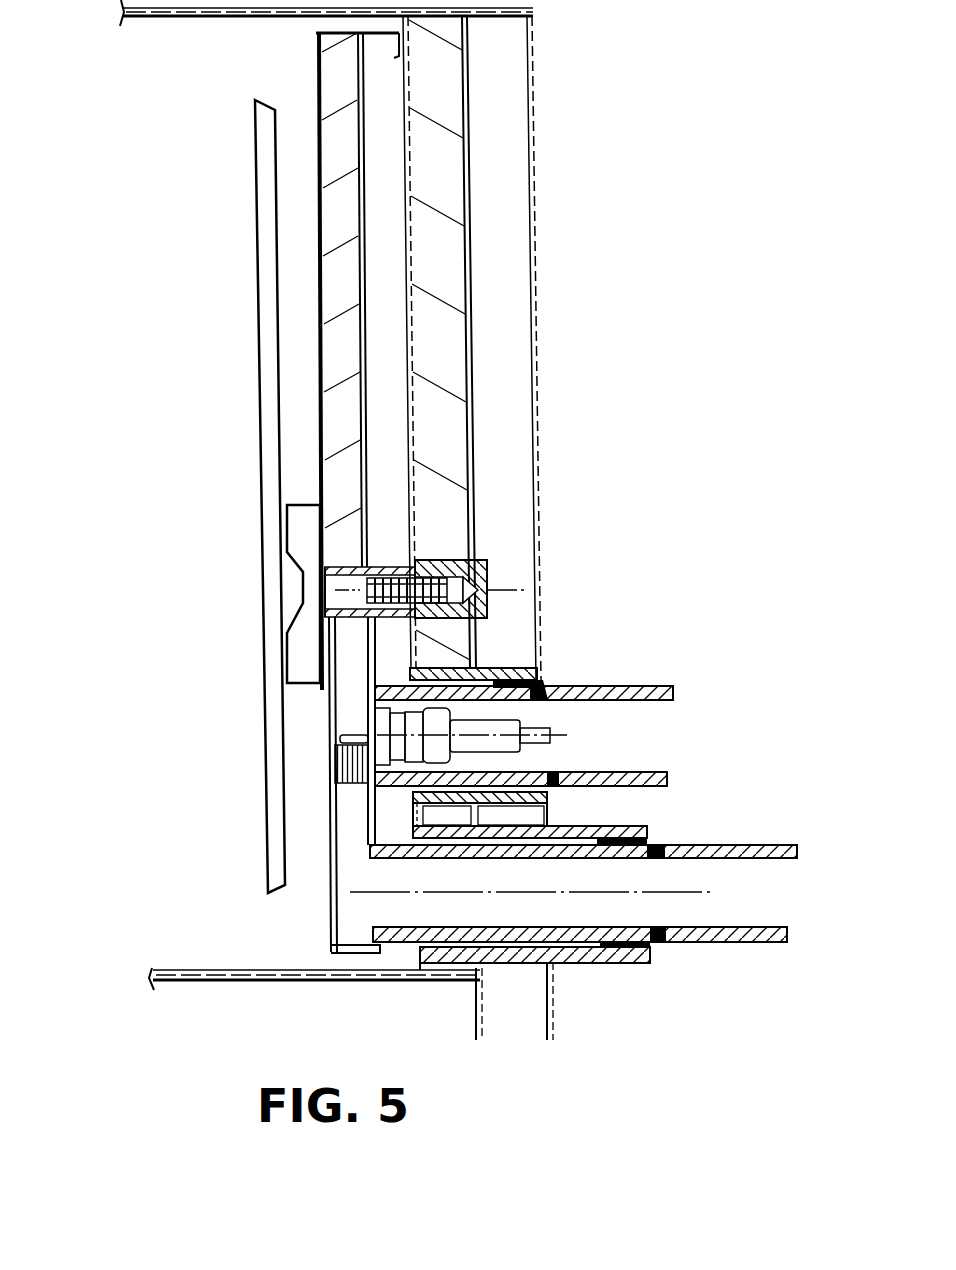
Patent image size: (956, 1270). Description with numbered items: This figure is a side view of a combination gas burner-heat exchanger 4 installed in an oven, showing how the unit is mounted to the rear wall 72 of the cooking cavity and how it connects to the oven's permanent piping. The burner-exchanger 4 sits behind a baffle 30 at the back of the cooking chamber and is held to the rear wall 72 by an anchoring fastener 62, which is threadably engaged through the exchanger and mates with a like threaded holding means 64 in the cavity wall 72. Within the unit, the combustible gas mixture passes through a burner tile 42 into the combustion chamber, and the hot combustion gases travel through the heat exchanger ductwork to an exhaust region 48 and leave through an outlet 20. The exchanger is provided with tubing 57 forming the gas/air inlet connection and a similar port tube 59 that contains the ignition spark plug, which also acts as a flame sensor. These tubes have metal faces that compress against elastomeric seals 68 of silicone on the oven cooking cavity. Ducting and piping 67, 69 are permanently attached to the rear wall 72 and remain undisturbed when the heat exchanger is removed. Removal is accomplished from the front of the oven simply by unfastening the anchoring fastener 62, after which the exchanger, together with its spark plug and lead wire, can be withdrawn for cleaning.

The combination gas burner-heat exchanger 4 is at (318, 273).
The outlet 20 is at (357, 905).
The baffle 30 is at (260, 352).
The burner tile 42 is at (340, 784).
The exhaust region 48 is at (548, 728).
The tubing 57 is at (620, 964).
The port tube 59 is at (387, 690).
The anchoring fastener 62 is at (303, 592).
The threaded holding means 64 is at (503, 545).
The ducting and piping 67 is at (717, 938).
The elastomeric seal 68 is at (548, 690).
The ducting and piping 69 is at (612, 776).
The rear wall 72 is at (400, 227).